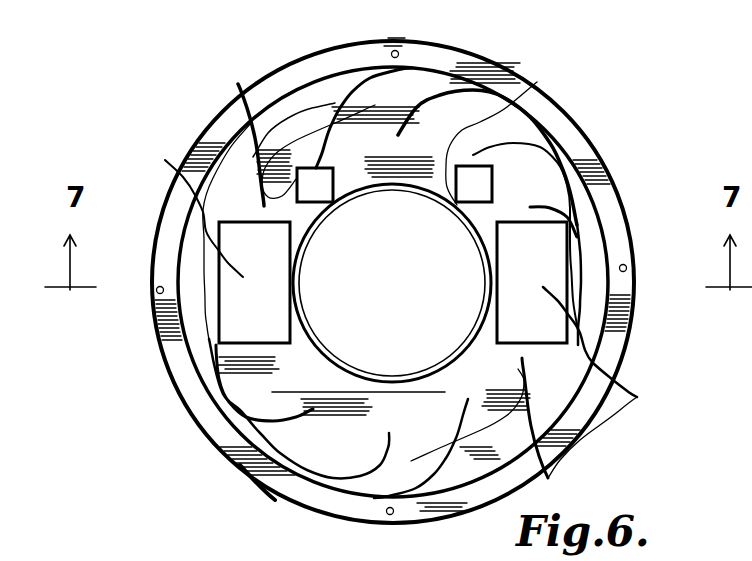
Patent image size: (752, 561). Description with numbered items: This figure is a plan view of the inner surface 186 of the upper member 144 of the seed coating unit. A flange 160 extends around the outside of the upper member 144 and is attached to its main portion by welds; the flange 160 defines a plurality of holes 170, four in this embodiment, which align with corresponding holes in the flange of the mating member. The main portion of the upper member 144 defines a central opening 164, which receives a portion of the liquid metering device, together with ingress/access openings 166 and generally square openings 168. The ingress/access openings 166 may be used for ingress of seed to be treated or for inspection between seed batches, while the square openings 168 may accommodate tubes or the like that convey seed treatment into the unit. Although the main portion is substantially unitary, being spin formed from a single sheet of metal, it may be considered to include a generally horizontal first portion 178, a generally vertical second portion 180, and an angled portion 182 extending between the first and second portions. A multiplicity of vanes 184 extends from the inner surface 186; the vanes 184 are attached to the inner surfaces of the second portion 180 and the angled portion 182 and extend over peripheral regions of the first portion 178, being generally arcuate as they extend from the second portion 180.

The upper member 144 is at (165, 160).
The flange 160 is at (625, 352).
The central opening 164 is at (458, 212).
The ingress/access openings 166 is at (240, 280).
The generally square openings 168 is at (243, 96).
The holes 170 is at (398, 52).
The first portion 178 is at (230, 392).
The second portion 180 is at (258, 485).
The angled portion 182 is at (262, 442).
The vanes 184 is at (640, 396).
The inner surface 186 is at (441, 426).